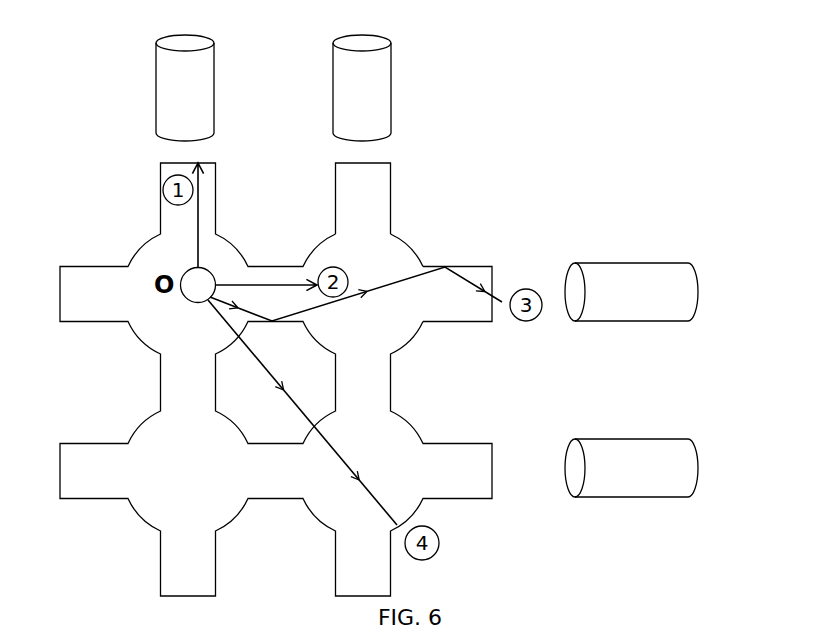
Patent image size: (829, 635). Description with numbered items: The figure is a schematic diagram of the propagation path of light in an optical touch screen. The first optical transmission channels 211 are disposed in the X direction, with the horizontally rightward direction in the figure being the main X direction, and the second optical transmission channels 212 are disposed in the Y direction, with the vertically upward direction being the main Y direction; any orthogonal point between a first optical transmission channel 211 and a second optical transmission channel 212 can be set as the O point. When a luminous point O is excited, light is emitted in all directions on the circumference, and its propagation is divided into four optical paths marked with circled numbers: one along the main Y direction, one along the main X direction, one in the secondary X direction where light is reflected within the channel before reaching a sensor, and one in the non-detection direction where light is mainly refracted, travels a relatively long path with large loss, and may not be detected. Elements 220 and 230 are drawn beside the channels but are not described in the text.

The first optical transmission channel 211 is at (480, 272).
The second optical transmission channel 212 is at (373, 190).
The light receiving element 220 is at (668, 285).
The light emitting element 230 is at (372, 72).